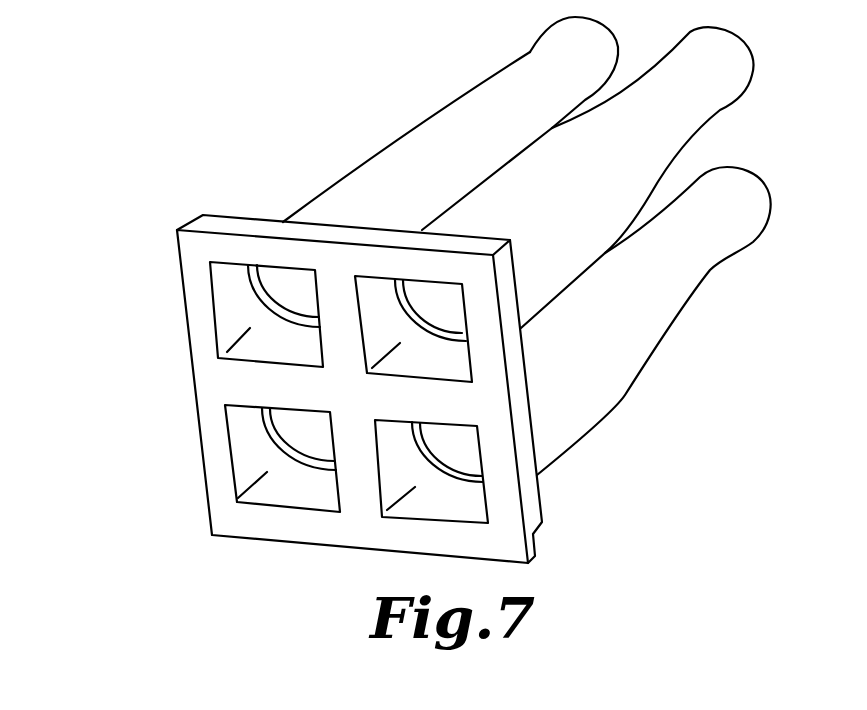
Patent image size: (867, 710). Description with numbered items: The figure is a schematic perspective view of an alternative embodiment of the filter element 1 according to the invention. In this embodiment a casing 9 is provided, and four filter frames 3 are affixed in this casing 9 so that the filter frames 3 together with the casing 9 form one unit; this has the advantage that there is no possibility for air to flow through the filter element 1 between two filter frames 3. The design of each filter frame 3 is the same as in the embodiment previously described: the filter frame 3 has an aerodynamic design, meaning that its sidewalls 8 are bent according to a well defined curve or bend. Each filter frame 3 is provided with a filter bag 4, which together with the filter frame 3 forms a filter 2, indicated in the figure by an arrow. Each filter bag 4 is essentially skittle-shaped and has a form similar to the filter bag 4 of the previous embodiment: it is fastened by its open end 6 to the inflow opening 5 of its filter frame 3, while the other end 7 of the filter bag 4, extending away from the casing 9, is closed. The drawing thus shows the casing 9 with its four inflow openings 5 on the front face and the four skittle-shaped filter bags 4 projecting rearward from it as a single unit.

The filter element 1 is at (178, 97).
The filter 2 is at (136, 310).
The filter frame 3 is at (227, 285).
The filter bag 4 is at (390, 167).
The inflow opening 5 is at (287, 323).
The open end 6 is at (313, 223).
The other end 7 is at (493, 105).
The sidewall 8 is at (290, 345).
The casing 9 is at (195, 240).